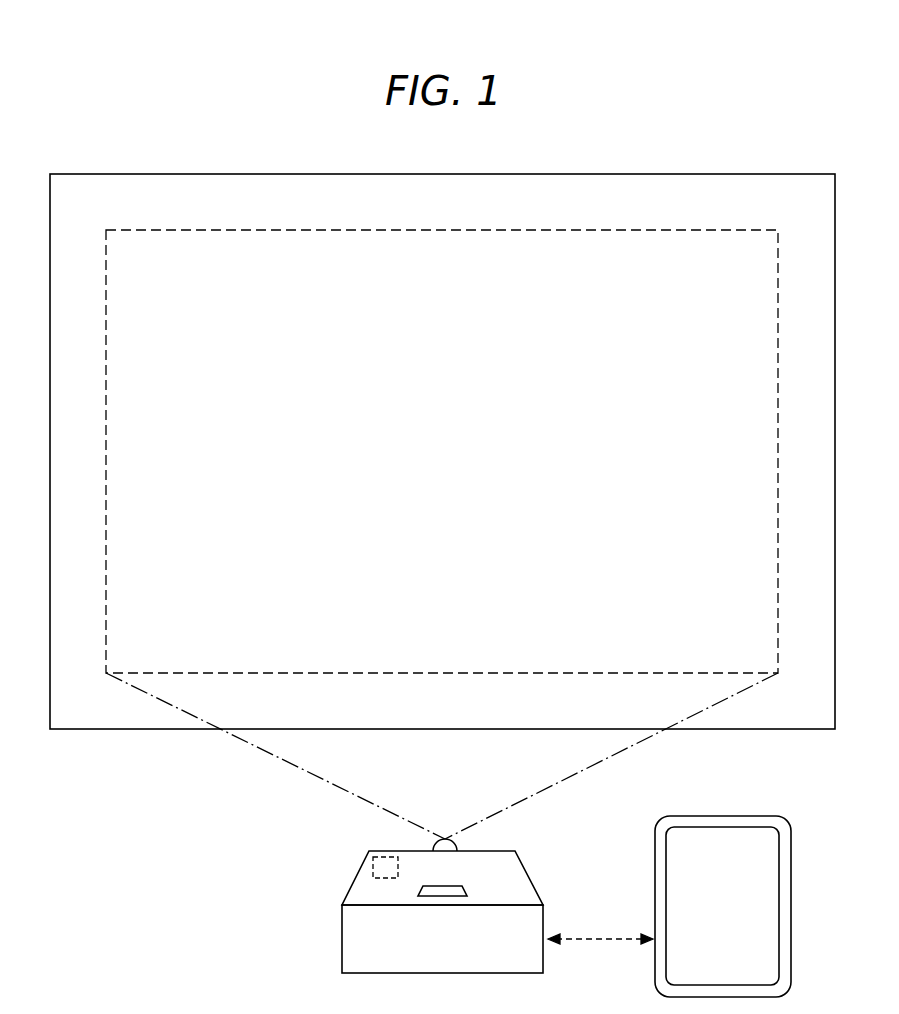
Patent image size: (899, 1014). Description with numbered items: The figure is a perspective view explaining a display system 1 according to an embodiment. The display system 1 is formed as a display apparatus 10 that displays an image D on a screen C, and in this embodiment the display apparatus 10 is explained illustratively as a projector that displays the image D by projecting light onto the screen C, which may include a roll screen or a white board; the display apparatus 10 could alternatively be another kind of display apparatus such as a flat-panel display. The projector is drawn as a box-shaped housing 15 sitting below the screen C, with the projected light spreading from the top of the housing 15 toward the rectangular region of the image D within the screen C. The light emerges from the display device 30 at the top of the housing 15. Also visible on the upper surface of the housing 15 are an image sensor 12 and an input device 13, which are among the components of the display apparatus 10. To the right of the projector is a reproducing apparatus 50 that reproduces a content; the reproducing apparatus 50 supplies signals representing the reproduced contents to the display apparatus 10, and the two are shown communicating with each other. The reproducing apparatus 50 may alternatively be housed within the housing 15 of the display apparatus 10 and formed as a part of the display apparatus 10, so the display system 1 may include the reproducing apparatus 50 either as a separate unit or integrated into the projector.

The display system 1 is at (147, 832).
The screen C is at (795, 174).
The image D is at (740, 230).
The display apparatus 10 is at (523, 858).
The housing 15 is at (520, 884).
The display device 30 is at (460, 843).
The image sensor 12 is at (367, 858).
The input device 13 is at (423, 887).
The reproducing apparatus 50 is at (752, 816).